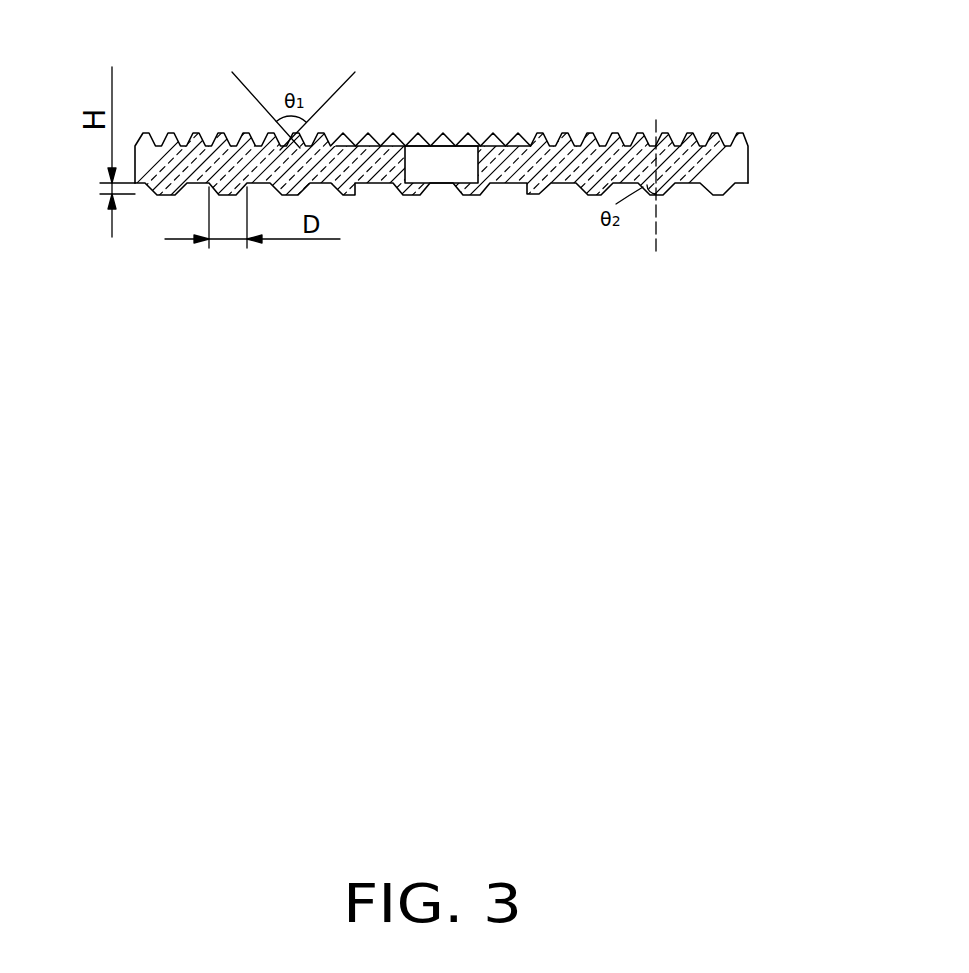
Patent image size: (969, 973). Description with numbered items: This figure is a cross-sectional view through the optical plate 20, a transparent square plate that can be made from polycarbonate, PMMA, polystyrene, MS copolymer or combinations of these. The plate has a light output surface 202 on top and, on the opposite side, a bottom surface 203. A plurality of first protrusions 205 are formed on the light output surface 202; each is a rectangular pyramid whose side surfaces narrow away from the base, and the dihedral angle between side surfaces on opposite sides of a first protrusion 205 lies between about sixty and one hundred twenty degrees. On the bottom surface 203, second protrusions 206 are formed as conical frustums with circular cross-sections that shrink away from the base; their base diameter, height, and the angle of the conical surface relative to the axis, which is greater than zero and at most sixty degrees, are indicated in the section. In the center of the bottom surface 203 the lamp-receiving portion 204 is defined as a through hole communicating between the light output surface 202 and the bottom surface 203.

The optical plate 20 is at (466, 132).
The light output surface 202 is at (507, 124).
The bottom surface 203 is at (490, 221).
The lamp-receiving portion 204 is at (438, 162).
The first protrusions 205 is at (723, 142).
The second protrusions 206 is at (532, 187).